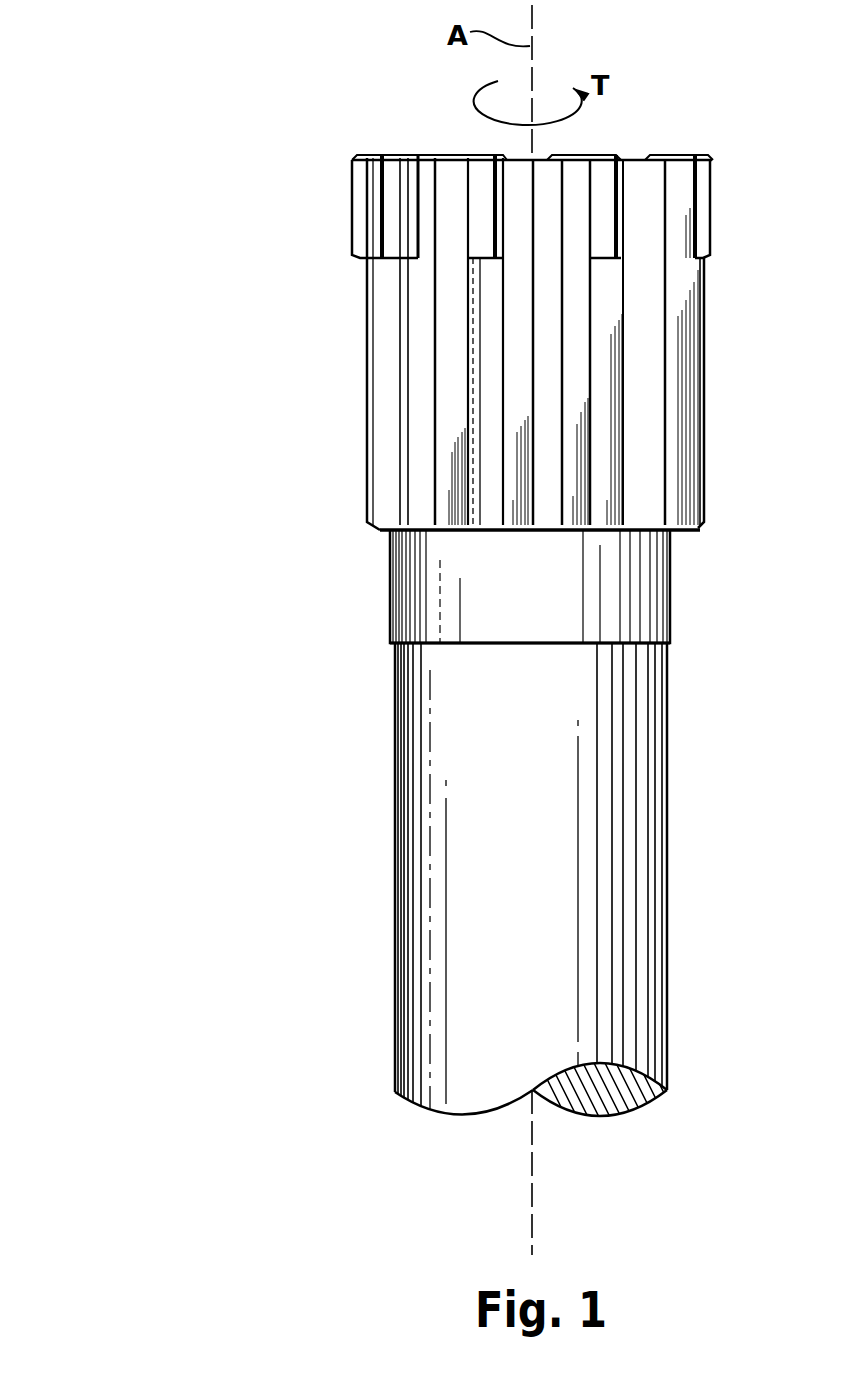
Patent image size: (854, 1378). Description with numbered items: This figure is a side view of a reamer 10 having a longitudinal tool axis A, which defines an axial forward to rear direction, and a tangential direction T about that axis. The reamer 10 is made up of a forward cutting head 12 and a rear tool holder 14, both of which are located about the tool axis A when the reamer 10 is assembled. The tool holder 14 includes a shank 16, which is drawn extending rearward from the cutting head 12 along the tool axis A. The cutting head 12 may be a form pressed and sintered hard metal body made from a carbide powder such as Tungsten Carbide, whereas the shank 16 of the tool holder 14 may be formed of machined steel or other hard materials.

The reamer 10 is at (196, 148).
The cutting head 12 is at (326, 363).
The tool holder 14 is at (197, 877).
The shank 16 is at (366, 765).